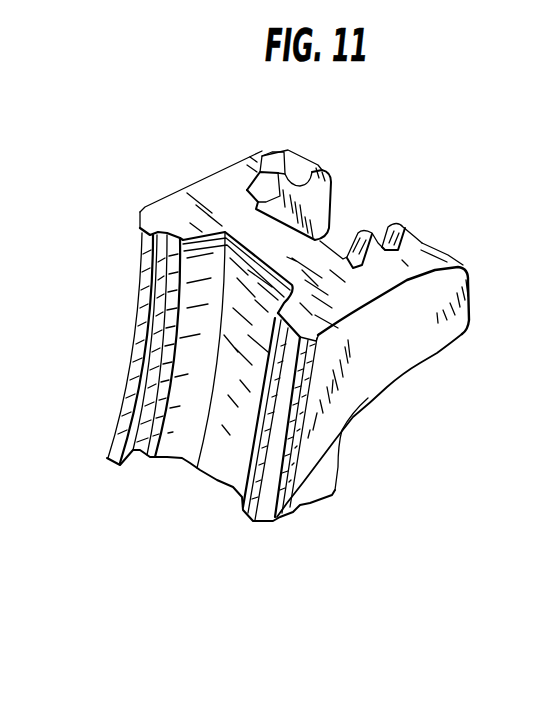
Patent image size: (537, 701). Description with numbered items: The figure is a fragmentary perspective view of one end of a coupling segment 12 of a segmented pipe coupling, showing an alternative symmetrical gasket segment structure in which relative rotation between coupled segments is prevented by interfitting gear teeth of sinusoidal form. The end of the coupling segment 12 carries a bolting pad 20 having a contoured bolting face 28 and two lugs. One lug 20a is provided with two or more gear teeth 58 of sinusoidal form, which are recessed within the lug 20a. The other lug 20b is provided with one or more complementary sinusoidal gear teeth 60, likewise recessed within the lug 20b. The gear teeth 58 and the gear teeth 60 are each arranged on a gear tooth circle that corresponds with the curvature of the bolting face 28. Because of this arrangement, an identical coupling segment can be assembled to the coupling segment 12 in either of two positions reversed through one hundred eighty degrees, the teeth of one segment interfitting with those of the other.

The coupling segment 12 is at (331, 457).
The bolting pad 20 is at (436, 334).
The lug 20a is at (438, 259).
The lug 20b is at (296, 152).
The bolting face 28 is at (228, 190).
The gear teeth 58 is at (391, 227).
The gear teeth 60 is at (277, 168).